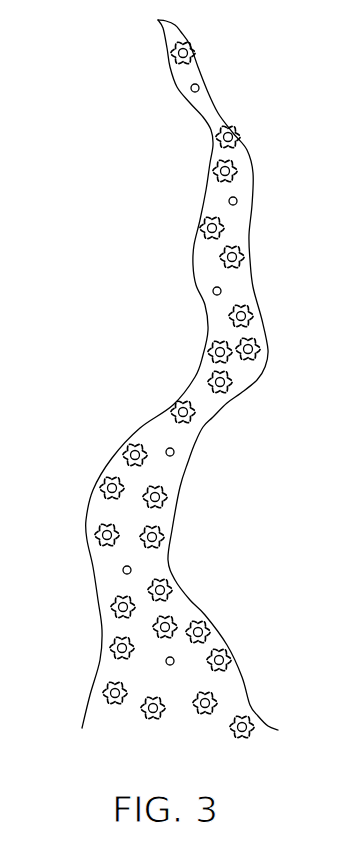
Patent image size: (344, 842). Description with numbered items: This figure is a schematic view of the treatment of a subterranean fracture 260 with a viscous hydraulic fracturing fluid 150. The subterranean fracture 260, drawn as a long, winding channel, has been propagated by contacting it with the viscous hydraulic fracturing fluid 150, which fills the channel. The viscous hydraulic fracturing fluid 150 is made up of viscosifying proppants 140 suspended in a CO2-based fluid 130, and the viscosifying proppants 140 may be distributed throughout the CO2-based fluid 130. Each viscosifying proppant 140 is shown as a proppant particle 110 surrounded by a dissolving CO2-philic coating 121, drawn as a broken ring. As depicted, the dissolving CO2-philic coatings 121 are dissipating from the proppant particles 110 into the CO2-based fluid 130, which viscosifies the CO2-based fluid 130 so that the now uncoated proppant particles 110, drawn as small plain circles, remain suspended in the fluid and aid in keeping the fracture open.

The subterranean fracture 260 is at (197, 64).
The proppant particles 110 is at (213, 291).
The viscosifying proppants 140 is at (167, 417).
The CO2-based fluid 130 is at (147, 475).
The dissolving CO2-philic coatings 121 is at (95, 534).
The viscous hydraulic fracturing fluid 150 is at (115, 724).